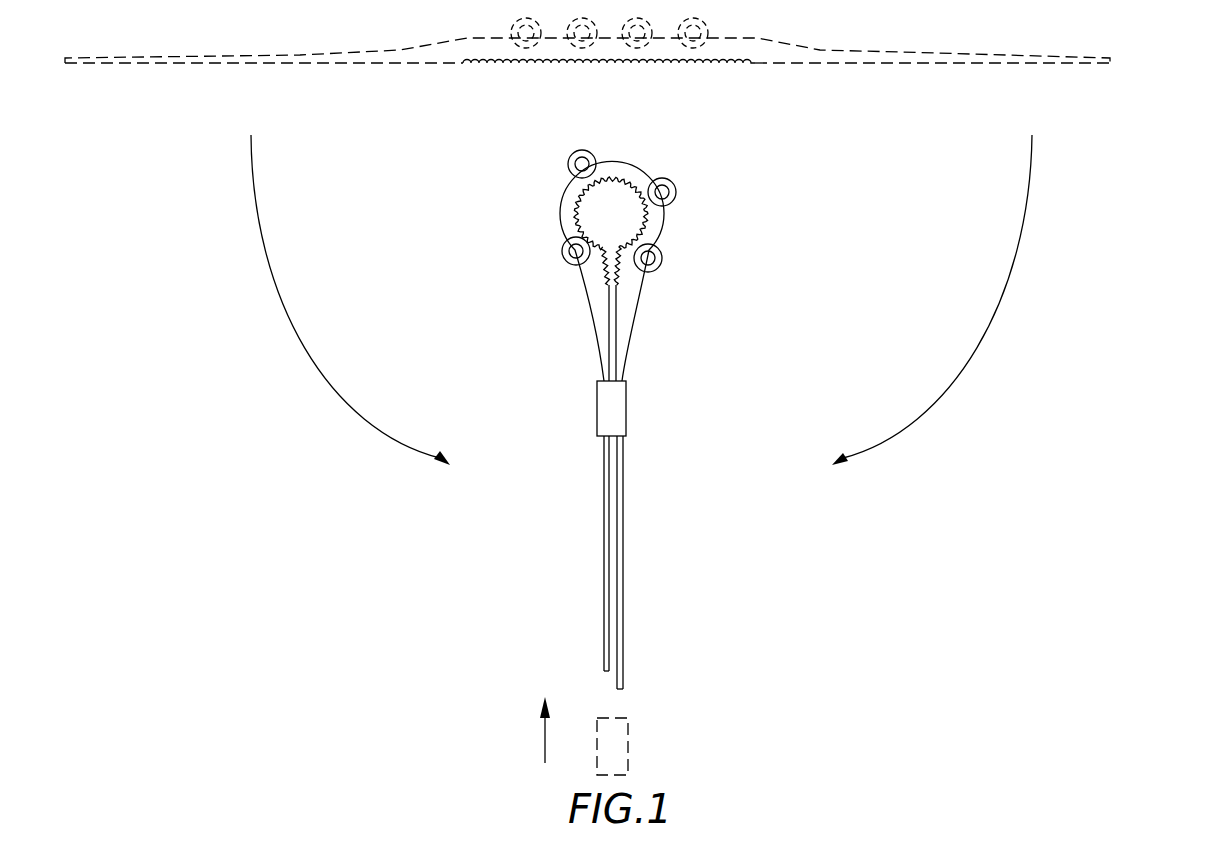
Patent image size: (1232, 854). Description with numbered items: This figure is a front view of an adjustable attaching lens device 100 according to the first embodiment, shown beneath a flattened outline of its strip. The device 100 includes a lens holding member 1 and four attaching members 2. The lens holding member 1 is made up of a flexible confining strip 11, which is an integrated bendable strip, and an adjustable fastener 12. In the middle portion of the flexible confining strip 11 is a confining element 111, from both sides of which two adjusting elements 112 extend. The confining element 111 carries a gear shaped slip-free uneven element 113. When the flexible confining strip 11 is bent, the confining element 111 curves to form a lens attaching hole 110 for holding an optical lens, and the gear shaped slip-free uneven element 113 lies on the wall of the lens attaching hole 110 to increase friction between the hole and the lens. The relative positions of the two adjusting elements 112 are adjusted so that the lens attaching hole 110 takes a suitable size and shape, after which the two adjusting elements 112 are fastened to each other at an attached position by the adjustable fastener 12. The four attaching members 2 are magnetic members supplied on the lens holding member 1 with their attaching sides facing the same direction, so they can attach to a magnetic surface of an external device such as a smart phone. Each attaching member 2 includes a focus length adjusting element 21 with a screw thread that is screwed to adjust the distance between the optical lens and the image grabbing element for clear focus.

The adjustable attaching lens device 100 is at (1156, 72).
The lens holding member 1 is at (664, 396).
The flexible confining strip 11 is at (666, 396).
The confining element 111 is at (622, 167).
The gear shaped slip-free uneven element 113 is at (613, 182).
The lens attaching hole 110 is at (614, 217).
The adjusting elements 112 is at (640, 547).
The adjustable fastener 12 is at (603, 409).
The attaching member 2 is at (584, 197).
The focus length adjusting element 21 is at (581, 164).